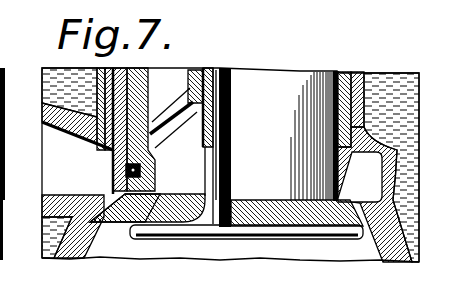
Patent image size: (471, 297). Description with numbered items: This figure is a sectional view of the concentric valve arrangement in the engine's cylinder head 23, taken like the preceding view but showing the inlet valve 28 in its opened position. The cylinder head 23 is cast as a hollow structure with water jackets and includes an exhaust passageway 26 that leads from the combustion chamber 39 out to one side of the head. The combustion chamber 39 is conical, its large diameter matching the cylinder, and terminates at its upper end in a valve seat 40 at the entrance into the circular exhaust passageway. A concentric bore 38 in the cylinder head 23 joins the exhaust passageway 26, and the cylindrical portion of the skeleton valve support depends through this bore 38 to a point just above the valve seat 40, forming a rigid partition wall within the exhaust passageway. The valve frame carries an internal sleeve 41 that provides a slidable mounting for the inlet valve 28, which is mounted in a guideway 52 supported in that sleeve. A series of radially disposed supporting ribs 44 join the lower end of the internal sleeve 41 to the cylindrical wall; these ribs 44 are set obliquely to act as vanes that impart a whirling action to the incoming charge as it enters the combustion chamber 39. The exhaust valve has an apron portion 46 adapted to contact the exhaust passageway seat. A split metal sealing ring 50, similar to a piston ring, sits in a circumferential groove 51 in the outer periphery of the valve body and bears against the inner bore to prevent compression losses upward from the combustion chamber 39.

The cylinder head 23 is at (43, 106).
The exhaust passageway 26 is at (77, 158).
The inlet valve 28 is at (132, 240).
The concentric bore 38 is at (351, 72).
The combustion chamber 39 is at (348, 249).
The valve seat 40 is at (92, 217).
The internal sleeve 41 is at (216, 58).
The supporting ribs 44 is at (172, 99).
The apron portion 46 is at (184, 191).
The metal sealing ring 50 is at (125, 172).
The circumferential groove 51 is at (158, 158).
The guideway 52 is at (205, 140).